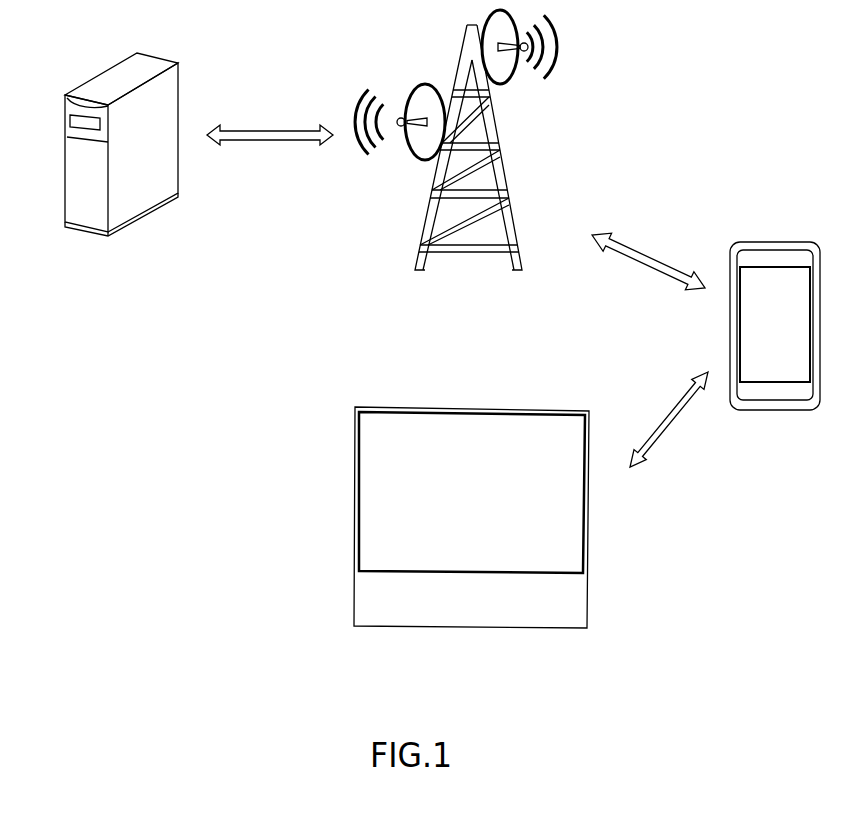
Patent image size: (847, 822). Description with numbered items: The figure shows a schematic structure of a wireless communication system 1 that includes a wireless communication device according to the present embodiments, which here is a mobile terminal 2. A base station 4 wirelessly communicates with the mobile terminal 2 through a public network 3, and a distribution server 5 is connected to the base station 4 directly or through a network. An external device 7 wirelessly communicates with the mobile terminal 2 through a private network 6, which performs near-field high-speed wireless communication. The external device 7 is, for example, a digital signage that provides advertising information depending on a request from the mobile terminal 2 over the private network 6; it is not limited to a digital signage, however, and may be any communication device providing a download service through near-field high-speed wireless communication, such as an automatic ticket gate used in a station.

The wireless communication system 1 is at (73, 528).
The mobile terminal 2 is at (775, 242).
The public network 3 is at (627, 257).
The base station 4 is at (500, 160).
The distribution server 5 is at (65, 168).
The private network 6 is at (663, 433).
The external device 7 is at (355, 425).